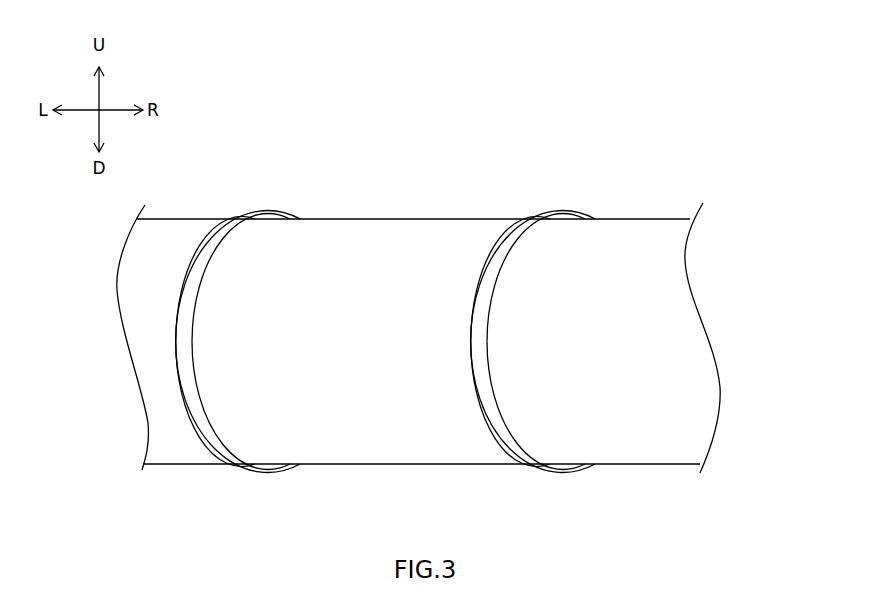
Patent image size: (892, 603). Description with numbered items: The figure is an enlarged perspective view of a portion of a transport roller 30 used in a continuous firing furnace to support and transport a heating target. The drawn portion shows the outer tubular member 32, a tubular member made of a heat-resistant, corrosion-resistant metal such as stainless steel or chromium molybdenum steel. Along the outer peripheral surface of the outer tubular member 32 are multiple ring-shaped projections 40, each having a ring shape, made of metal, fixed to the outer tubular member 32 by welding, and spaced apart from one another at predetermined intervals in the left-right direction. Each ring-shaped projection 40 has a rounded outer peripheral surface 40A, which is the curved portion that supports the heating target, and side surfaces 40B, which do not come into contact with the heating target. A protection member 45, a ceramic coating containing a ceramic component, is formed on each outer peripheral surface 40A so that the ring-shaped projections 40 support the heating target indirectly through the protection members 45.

The transport roller 30 is at (682, 158).
The outer tubular member 32 is at (413, 237).
The ring-shaped projection 40 is at (233, 215).
The outer peripheral surface 40A is at (238, 217).
The side surface 40B is at (233, 445).
The protection member 45 is at (206, 438).